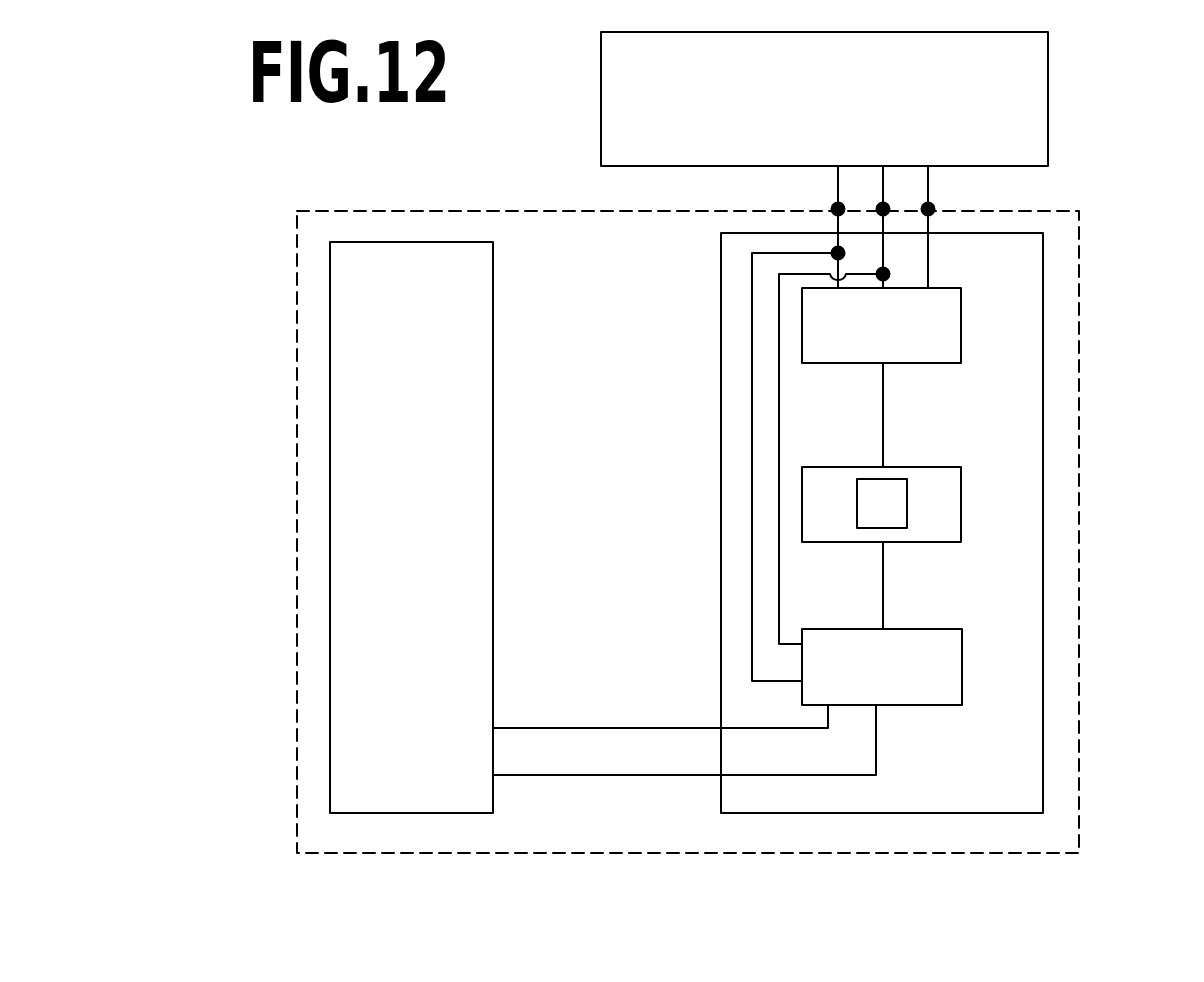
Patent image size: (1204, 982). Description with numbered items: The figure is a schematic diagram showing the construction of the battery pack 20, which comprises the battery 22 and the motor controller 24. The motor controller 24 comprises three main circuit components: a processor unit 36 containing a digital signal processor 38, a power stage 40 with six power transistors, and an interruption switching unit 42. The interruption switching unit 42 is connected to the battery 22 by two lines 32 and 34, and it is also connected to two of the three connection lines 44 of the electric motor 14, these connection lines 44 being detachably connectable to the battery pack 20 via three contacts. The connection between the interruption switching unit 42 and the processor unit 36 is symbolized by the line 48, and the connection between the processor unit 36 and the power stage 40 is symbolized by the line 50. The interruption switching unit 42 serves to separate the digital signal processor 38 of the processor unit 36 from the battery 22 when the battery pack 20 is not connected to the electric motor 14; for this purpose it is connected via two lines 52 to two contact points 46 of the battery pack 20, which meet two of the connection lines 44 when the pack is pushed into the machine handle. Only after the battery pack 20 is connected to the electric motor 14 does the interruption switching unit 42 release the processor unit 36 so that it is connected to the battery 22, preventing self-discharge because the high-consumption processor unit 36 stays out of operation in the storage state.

The electric motor 14 is at (624, 101).
The battery pack 20 is at (1080, 700).
The battery 22 is at (360, 497).
The motor controller 24 is at (1034, 561).
The line 32 is at (628, 728).
The line 34 is at (630, 776).
The processor unit 36 is at (948, 497).
The digital signal processor 38 is at (870, 490).
The power stage 40 is at (948, 322).
The interruption switching unit 42 is at (908, 688).
The connection lines 44 is at (928, 185).
The contact points 46 is at (838, 212).
The line 48 is at (885, 580).
The line 50 is at (885, 425).
The lines 52 is at (778, 518).